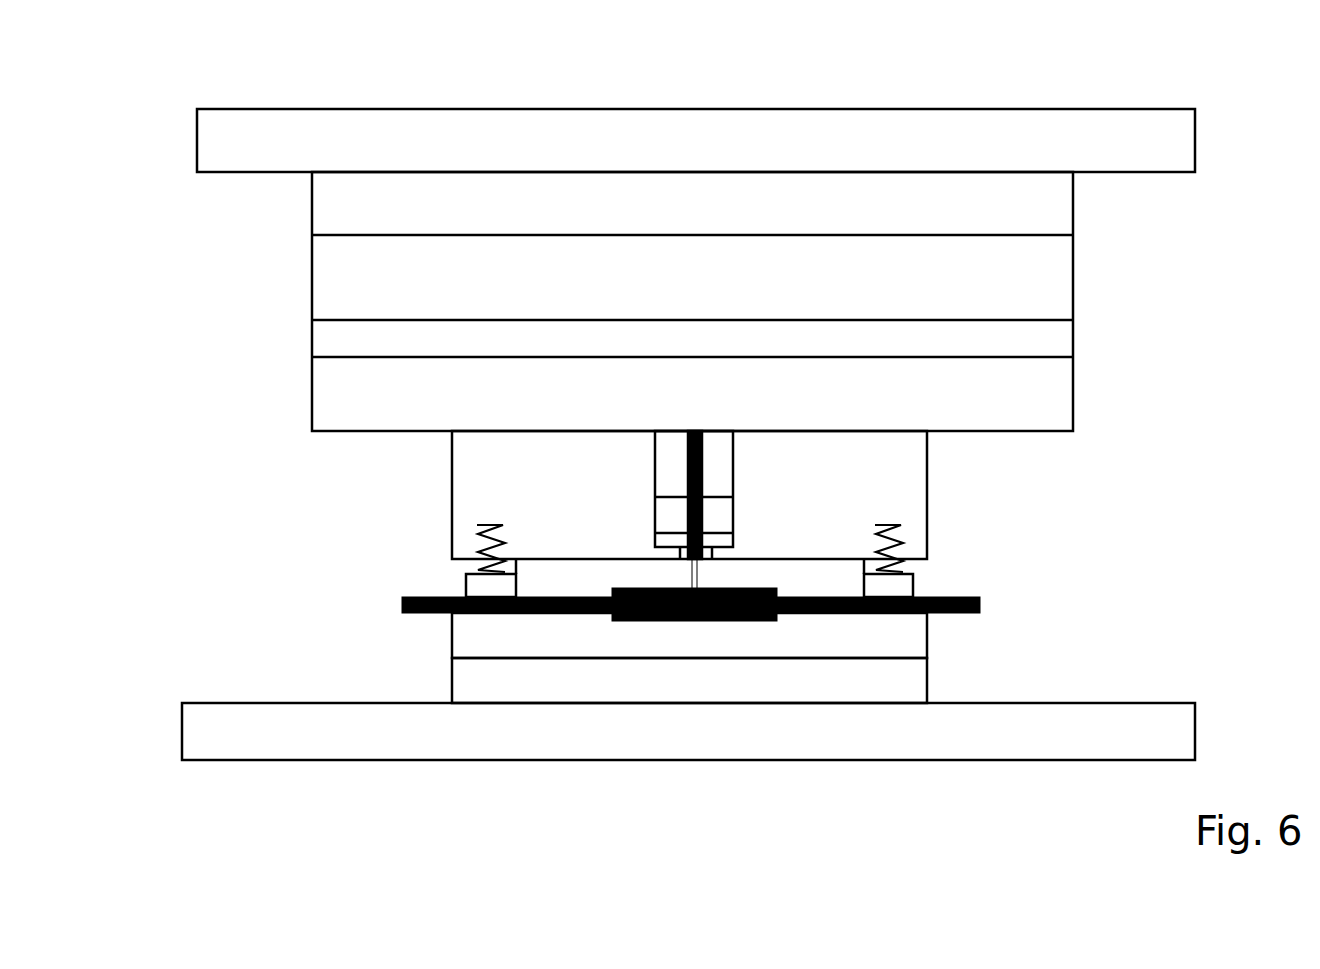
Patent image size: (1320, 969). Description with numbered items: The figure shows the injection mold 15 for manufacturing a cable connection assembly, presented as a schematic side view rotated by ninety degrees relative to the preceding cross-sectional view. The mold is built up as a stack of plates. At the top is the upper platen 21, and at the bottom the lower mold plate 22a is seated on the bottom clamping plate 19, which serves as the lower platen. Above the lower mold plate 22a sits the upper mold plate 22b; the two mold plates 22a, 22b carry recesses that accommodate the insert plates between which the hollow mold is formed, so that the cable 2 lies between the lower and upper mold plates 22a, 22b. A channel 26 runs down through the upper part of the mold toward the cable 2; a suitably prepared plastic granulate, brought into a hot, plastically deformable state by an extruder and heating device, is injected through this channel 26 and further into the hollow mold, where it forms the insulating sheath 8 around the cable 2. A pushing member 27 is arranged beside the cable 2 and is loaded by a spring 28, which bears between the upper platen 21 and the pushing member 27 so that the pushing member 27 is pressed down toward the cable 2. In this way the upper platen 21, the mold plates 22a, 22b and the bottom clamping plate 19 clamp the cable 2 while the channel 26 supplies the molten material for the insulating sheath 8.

The injection mold 15 is at (175, 72).
The upper platen 21 is at (913, 470).
The channel 26 is at (702, 470).
The spring 28 is at (903, 535).
The pushing member 27 is at (913, 585).
The cable 2 is at (804, 614).
The insulating sheath 8 is at (692, 622).
The upper mold plate 22b is at (752, 567).
The lower mold plate 22a is at (913, 638).
The bottom clamping plate 19 is at (913, 685).